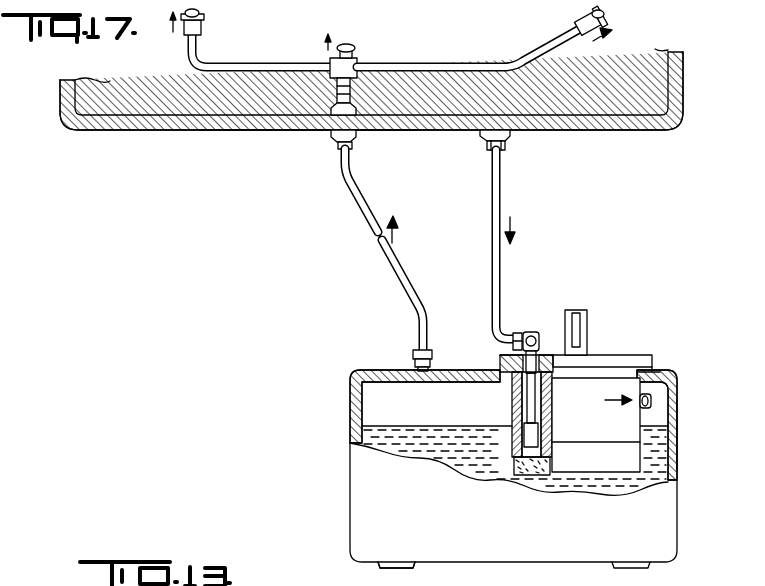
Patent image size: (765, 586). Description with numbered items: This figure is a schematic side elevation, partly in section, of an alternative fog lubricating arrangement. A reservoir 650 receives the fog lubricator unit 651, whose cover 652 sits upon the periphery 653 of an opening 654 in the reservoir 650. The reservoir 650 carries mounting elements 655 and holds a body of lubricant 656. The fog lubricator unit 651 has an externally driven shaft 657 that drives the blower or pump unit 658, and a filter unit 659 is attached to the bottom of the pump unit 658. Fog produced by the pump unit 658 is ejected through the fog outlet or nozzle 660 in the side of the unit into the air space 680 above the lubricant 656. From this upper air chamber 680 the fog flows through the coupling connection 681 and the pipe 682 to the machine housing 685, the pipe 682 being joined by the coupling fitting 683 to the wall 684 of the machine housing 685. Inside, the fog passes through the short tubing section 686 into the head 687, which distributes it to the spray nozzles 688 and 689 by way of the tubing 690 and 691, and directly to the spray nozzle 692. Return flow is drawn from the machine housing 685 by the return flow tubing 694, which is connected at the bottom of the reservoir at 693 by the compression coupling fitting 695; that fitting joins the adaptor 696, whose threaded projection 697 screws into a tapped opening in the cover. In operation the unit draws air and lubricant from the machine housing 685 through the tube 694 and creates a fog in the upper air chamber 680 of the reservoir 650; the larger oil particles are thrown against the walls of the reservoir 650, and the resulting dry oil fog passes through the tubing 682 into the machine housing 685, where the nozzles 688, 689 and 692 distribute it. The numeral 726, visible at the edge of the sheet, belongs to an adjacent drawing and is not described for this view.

In FIG. 17, the reservoir 650 is at (672, 382).
In FIG. 17, the fog lubricator unit 651 is at (618, 357).
In FIG. 17, the cover 652 is at (646, 366).
In FIG. 17, the periphery 653 is at (657, 372).
In FIG. 17, the opening 654 is at (511, 384).
In FIG. 17, the mounting elements 655 is at (618, 585).
In FIG. 17, the lubricant 656 is at (650, 463).
In FIG. 17, the externally driven shaft 657 is at (586, 316).
In FIG. 17, the pump unit 658 is at (600, 418).
In FIG. 17, the filter unit 659 is at (600, 460).
In FIG. 17, the fog outlet 660 is at (652, 402).
In FIG. 17, the air space 680 is at (385, 400).
In FIG. 17, the coupling connection 681 is at (410, 357).
In FIG. 17, the pipe 682 is at (385, 250).
In FIG. 17, the coupling fitting 683 is at (338, 147).
In FIG. 17, the wall 684 is at (229, 130).
In FIG. 17, the machine housing 685 is at (70, 120).
In FIG. 17, the short tubing section 686 is at (352, 90).
In FIG. 17, the head 687 is at (352, 70).
In FIG. 17, the spray nozzle 688 is at (205, 20).
In FIG. 17, the spray nozzle 689 is at (606, 13).
In FIG. 17, the tubing 690 is at (228, 66).
In FIG. 17, the tubing 691 is at (507, 70).
In FIG. 17, the spray nozzle 692 is at (347, 46).
In FIG. 17, the bottom of the reservoir 693 is at (505, 133).
In FIG. 17, the return flow tubing 694 is at (501, 195).
In FIG. 17, the compression coupling fitting 695 is at (487, 147).
In FIG. 17, the adaptor 696 is at (531, 330).
In FIG. 17, the threaded projection 697 is at (512, 352).
In FIG. 19, the element of FIG. 19 726 is at (30, 578).